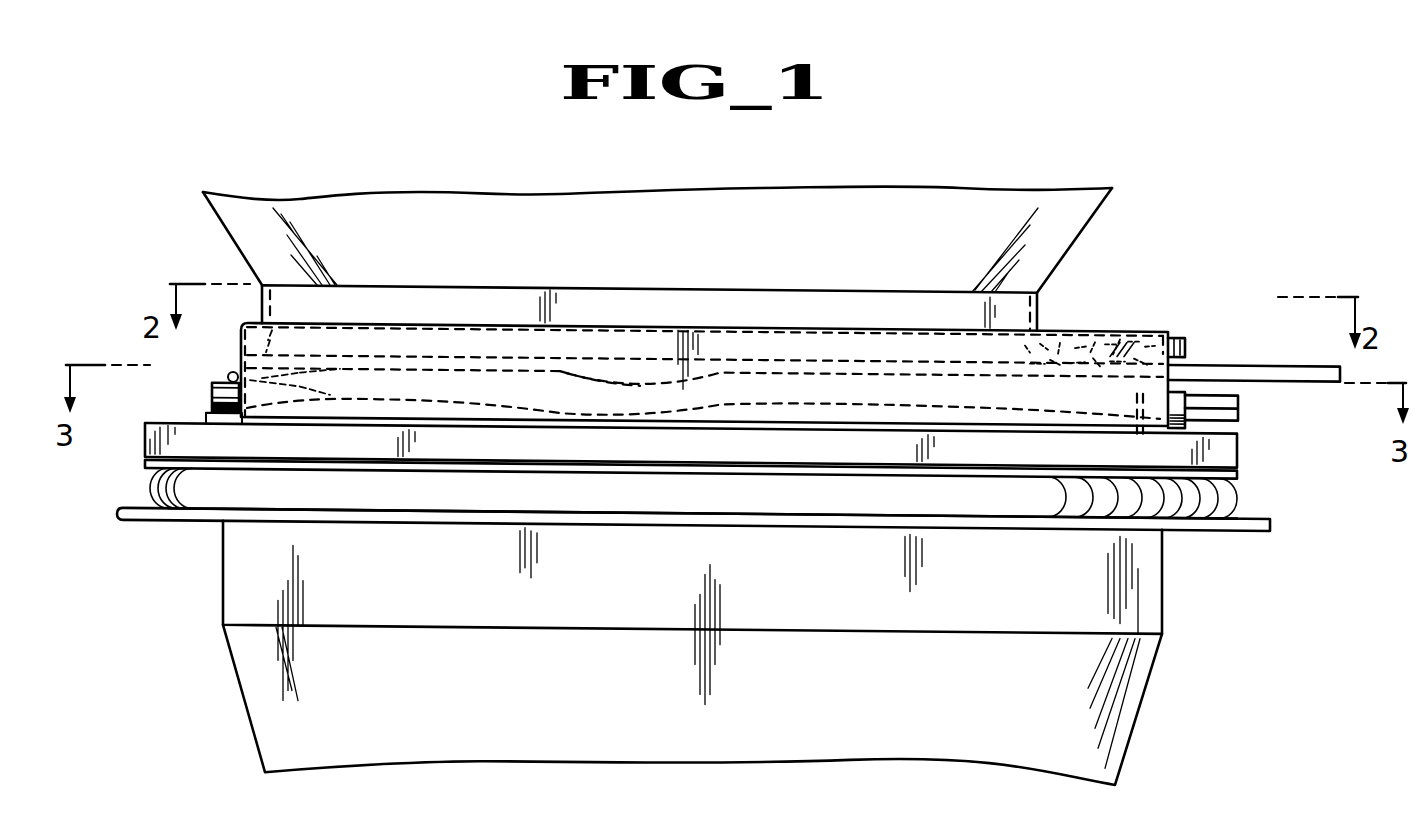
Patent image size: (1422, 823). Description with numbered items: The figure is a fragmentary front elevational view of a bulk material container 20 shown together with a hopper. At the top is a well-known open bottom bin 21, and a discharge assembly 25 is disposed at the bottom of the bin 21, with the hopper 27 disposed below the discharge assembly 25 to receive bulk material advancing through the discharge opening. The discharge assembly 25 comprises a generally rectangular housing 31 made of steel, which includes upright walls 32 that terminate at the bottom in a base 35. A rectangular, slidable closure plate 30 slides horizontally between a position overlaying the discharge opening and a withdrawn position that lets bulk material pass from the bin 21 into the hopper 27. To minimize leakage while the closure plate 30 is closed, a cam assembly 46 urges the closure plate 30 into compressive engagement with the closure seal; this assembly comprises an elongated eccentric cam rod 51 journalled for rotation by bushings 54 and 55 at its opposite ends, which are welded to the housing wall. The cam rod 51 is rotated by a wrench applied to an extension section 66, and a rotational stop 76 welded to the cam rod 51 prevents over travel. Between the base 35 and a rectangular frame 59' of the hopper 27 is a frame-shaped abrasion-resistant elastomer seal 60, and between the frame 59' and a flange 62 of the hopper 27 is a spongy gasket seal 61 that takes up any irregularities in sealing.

The bulk material container 20 is at (1234, 150).
The open bottom bin 21 is at (1076, 242).
The discharge assembly 25 is at (1199, 308).
The hopper 27 is at (1143, 714).
The closure plate 30 is at (1254, 367).
The housing 31 is at (1100, 324).
The upright walls 32 is at (1039, 304).
The base 35 is at (207, 419).
The cam assembly 46 is at (376, 410).
The cam rod 51 is at (575, 373).
The bushing 54 is at (226, 383).
The bushing 55 is at (1171, 390).
The rectangular frame 59' is at (665, 473).
The seal 60 is at (143, 430).
The gasket seal 61 is at (1243, 503).
The flange 62 is at (140, 523).
The extension section 66 is at (1236, 404).
The rotational stop 76 is at (230, 373).